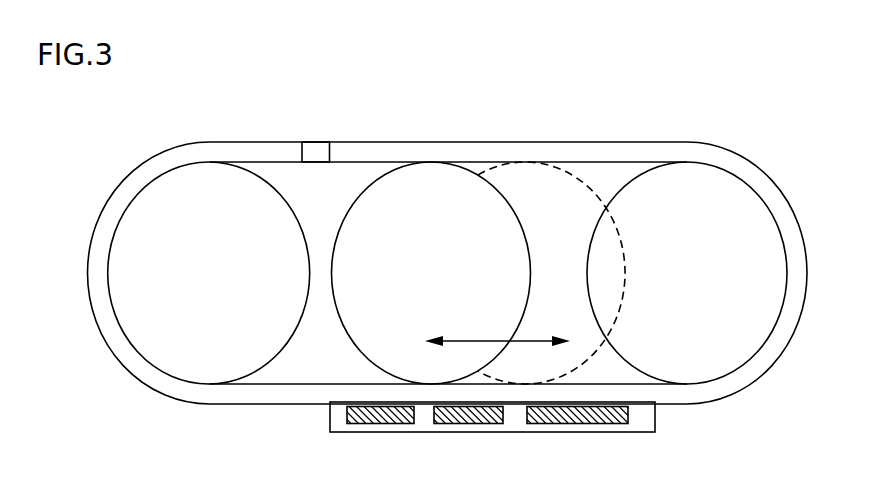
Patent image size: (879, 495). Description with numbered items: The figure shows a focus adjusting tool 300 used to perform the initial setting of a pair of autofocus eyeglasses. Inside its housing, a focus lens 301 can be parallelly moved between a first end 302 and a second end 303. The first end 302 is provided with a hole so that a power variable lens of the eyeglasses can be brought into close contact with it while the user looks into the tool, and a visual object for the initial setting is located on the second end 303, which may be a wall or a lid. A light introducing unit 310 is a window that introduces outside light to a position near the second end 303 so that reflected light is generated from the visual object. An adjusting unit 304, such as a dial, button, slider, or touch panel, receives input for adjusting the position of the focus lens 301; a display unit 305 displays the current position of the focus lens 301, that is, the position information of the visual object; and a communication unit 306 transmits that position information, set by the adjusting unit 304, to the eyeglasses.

The focus adjusting tool 300 is at (565, 142).
The focus lens 301 is at (433, 187).
The first end 302 is at (688, 188).
The second end 303 is at (195, 362).
The adjusting unit 304 is at (578, 418).
The display unit 305 is at (465, 424).
The communication unit 306 is at (373, 424).
The light introducing unit 310 is at (310, 158).